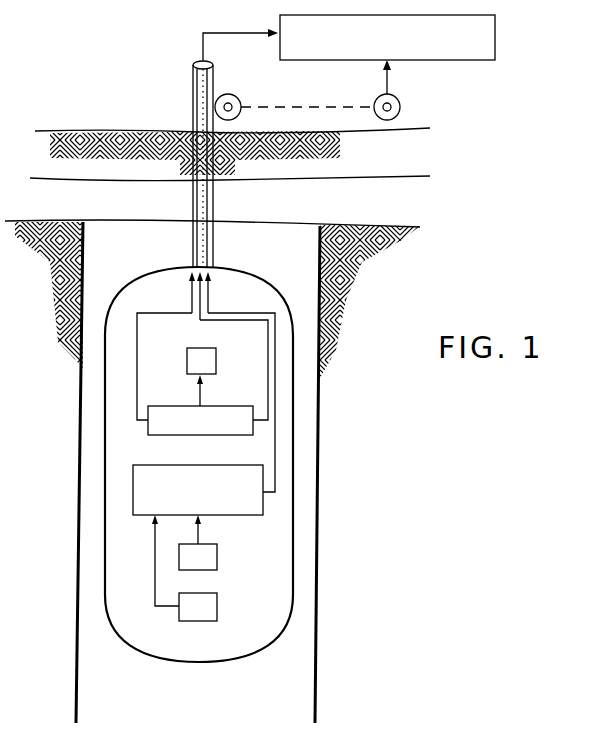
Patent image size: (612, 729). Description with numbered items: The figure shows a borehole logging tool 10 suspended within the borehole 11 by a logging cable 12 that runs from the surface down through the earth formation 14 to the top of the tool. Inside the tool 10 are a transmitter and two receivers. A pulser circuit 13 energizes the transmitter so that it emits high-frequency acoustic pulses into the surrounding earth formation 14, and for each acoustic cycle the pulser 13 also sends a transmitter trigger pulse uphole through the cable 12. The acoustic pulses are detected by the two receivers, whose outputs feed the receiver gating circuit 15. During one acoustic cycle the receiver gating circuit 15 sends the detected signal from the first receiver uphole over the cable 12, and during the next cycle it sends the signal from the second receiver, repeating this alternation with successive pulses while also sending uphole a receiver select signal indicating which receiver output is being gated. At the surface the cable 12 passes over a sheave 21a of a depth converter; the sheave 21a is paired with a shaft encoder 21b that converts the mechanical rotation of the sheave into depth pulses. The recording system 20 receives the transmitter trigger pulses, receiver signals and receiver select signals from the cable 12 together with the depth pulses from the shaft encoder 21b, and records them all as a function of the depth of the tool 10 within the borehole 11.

The borehole logging tool 10 is at (254, 278).
The borehole 11 is at (140, 252).
The logging cable 12 is at (192, 95).
The pulser circuit 13 is at (218, 405).
The earth formation 14 is at (418, 444).
The receiver gating circuit 15 is at (218, 516).
The recording system 20 is at (495, 36).
The sheave 21a is at (240, 98).
The shaft encoder 21b is at (401, 106).